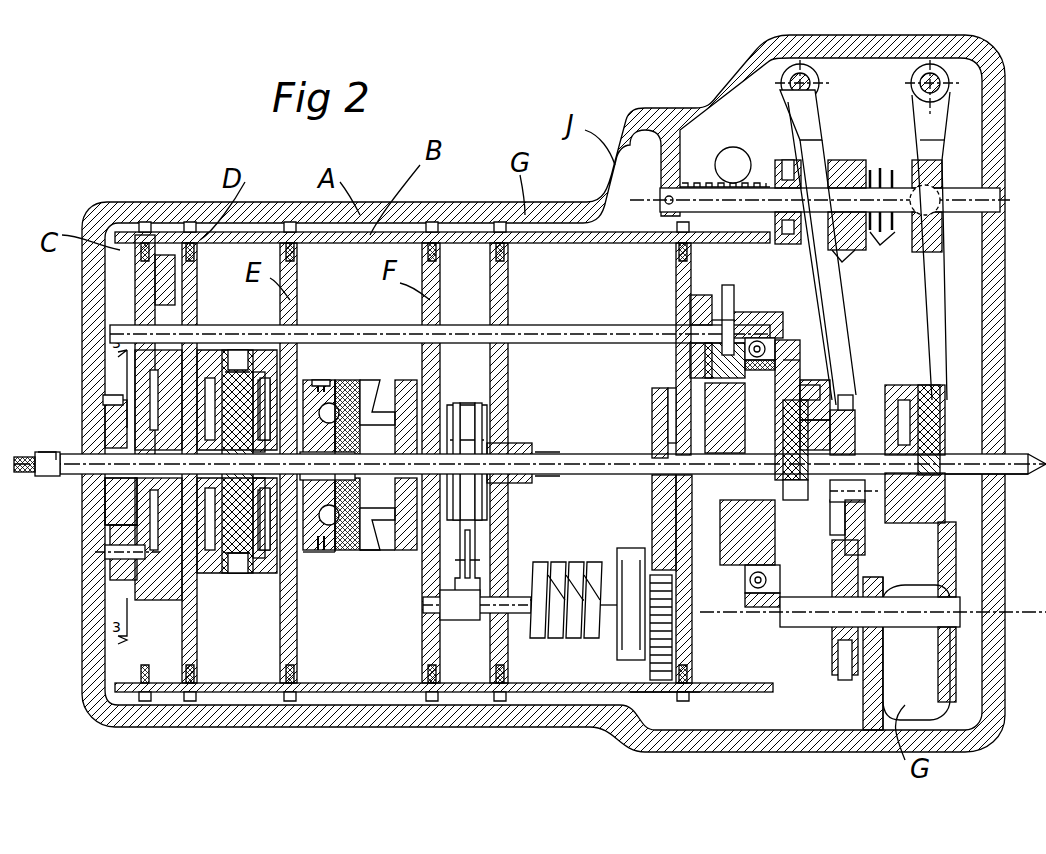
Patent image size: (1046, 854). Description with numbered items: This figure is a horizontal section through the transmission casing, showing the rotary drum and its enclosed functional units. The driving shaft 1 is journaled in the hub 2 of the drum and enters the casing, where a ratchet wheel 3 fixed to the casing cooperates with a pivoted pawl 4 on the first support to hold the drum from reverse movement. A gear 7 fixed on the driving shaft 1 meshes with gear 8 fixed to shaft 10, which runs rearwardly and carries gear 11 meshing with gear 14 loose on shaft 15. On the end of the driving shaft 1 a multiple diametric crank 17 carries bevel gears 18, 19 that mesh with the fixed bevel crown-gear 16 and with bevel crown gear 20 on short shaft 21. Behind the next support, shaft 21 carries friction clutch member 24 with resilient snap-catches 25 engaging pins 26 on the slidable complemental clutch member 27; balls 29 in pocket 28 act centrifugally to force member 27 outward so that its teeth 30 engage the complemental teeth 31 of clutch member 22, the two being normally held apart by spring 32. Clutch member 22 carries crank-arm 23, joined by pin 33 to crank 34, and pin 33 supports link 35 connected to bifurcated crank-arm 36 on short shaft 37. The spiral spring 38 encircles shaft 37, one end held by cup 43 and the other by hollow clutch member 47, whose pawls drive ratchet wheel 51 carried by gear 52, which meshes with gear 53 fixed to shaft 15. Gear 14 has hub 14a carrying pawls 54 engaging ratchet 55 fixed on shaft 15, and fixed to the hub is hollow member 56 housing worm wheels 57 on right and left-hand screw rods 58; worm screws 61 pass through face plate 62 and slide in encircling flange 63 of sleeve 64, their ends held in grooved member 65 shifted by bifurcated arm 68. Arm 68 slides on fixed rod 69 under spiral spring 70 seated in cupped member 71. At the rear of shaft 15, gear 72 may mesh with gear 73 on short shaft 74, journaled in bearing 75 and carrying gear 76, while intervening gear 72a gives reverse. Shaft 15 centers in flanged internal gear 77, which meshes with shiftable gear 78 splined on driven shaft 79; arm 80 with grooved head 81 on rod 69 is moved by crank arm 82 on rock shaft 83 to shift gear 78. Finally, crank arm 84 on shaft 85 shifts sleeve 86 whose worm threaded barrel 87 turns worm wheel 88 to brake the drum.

The driving shaft 1 is at (80, 456).
The hub 2 is at (68, 482).
The ratchet wheel 3 is at (103, 395).
The pivoted pawl 4 is at (118, 540).
The gear 7 is at (130, 498).
The gear 8 is at (135, 297).
The shaft 10 is at (550, 332).
The gear 11 is at (690, 318).
The gear 14 is at (677, 288).
The hub 14a is at (680, 500).
The shaft 15 is at (542, 458).
The bevel crown-gear 16 is at (222, 570).
The multiple diametric crank 17 is at (260, 572).
The bevel gear 18 is at (238, 578).
The bevel gear 19 is at (222, 362).
The bevel crown gear 20 is at (272, 395).
The short shaft 21 is at (355, 560).
The clutch member 22 is at (402, 404).
The crank-arm 23 is at (450, 408).
The friction clutch member 24 is at (302, 556).
The resilient snap-catches 25 is at (357, 380).
The pins 26 is at (340, 386).
The complemental clutch member 27 is at (374, 544).
The pocket 28 is at (323, 548).
The balls 29 is at (320, 384).
The teeth 30 is at (365, 392).
The complemental teeth 31 is at (440, 603).
The spring 32 is at (356, 492).
The pin 33 is at (470, 408).
The crank 34 is at (483, 432).
The link 35 is at (465, 488).
The bifurcated crank-arm 36 is at (470, 577).
The short shaft 37 is at (435, 612).
The spiral spring 38 is at (560, 568).
The cup 43 is at (598, 645).
The hollow clutch member 47 is at (627, 652).
The ratchet wheel 51 is at (634, 692).
The gear 52 is at (668, 660).
The gear 53 is at (655, 404).
The pawls 54 is at (665, 438).
The ratchet 55 is at (665, 478).
The hollow member 56 is at (745, 312).
The grooved worm wheels 57 is at (780, 340).
The right and left-hand screw rod 58 is at (795, 358).
The worm screw 61 is at (805, 398).
The face plate 62 is at (775, 362).
The encircling flange 63 is at (676, 392).
The sleeve 64 is at (838, 546).
The grooved member 65 is at (840, 505).
The bifurcated arm 68 is at (830, 261).
The fixed rod 69 is at (830, 195).
The spiral spring 70 is at (882, 176).
The cupped member 71 is at (876, 232).
The gear 72 is at (845, 418).
The intervening gear 72a is at (838, 532).
The gear 73 is at (838, 646).
The short shaft 74 is at (912, 630).
The journal bearing 75 is at (964, 592).
The gear 76 is at (960, 670).
The flanged internal gear 77 is at (897, 396).
The shiftable gear 78 is at (938, 442).
The driven shaft 79 is at (946, 474).
The arm 80 is at (928, 292).
The grooved head 81 is at (934, 222).
The crank arm 82 is at (940, 132).
The rock shaft 83 is at (925, 83).
The crank arm 84 is at (790, 102).
The shaft 85 is at (805, 78).
The sleeve 86 is at (805, 220).
The worm threaded barrel 87 is at (690, 185).
The worm wheel 88 is at (736, 160).